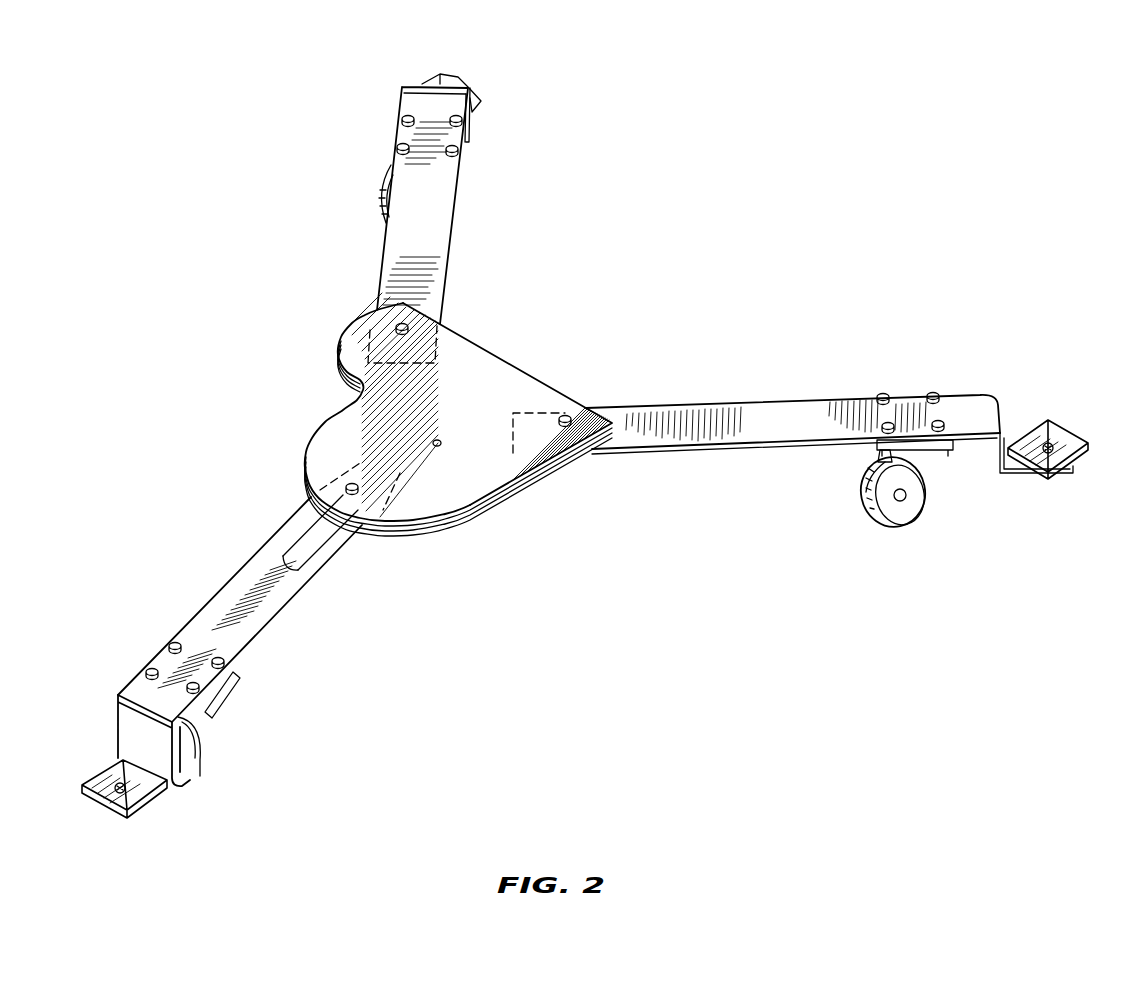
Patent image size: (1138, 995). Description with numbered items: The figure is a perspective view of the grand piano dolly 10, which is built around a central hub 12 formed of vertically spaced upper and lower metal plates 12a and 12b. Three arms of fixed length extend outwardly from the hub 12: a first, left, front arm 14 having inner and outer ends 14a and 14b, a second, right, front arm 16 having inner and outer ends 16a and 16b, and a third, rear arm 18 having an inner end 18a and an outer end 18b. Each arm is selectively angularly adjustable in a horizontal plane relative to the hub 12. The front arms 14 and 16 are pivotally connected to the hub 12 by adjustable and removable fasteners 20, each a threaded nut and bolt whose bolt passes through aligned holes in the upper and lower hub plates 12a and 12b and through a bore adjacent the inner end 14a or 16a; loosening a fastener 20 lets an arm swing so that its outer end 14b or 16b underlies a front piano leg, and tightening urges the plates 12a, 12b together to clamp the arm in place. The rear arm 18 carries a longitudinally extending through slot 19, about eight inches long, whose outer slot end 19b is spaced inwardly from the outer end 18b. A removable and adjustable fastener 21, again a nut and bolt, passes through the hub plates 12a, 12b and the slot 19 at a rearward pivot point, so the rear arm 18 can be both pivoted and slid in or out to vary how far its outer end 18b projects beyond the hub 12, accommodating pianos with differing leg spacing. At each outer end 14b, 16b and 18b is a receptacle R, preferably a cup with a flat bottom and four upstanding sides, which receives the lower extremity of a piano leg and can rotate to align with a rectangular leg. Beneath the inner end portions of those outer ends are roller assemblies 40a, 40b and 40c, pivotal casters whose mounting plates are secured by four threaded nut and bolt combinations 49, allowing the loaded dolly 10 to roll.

The grand piano dolly 10 is at (600, 595).
The central hub 12 is at (512, 351).
The upper hub plate 12a is at (351, 412).
The lower hub plate 12b is at (498, 503).
The first, left, front arm 14 is at (761, 396).
The inner end of left front arm 14a is at (513, 427).
The outer end of left front arm 14b is at (983, 395).
The second, right, front arm 16 is at (454, 238).
The inner end of right front arm 16a is at (437, 357).
The outer end of right front arm 16b is at (402, 94).
The third, rear arm 18 is at (286, 622).
The inner end of rear arm 18a is at (402, 478).
The outer end of rear arm 18b is at (118, 694).
The through slot 19 is at (311, 549).
The outer slot end 19b is at (280, 552).
The adjustable and removable fastener 20 is at (402, 322).
The removable and adjustable fastener 21 is at (352, 480).
The roller assembly 40a is at (859, 509).
The roller assembly 40b is at (370, 196).
The roller assembly 40c is at (218, 748).
The threaded nut and bolt combinations 49 is at (398, 145).
The receptacle R is at (477, 70).